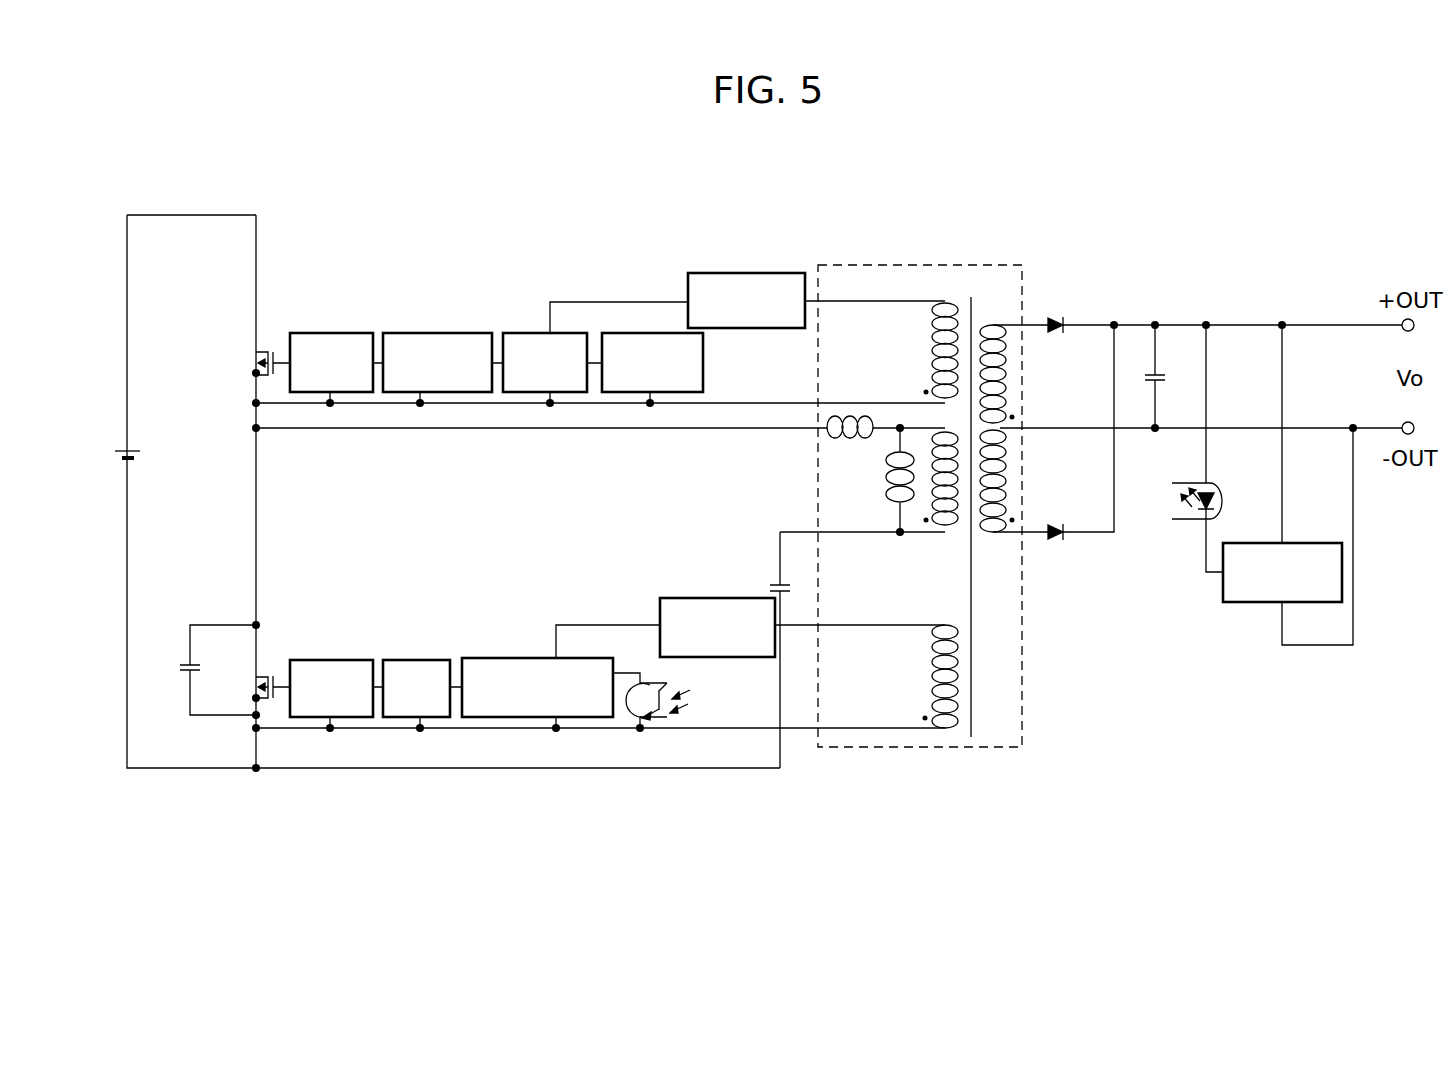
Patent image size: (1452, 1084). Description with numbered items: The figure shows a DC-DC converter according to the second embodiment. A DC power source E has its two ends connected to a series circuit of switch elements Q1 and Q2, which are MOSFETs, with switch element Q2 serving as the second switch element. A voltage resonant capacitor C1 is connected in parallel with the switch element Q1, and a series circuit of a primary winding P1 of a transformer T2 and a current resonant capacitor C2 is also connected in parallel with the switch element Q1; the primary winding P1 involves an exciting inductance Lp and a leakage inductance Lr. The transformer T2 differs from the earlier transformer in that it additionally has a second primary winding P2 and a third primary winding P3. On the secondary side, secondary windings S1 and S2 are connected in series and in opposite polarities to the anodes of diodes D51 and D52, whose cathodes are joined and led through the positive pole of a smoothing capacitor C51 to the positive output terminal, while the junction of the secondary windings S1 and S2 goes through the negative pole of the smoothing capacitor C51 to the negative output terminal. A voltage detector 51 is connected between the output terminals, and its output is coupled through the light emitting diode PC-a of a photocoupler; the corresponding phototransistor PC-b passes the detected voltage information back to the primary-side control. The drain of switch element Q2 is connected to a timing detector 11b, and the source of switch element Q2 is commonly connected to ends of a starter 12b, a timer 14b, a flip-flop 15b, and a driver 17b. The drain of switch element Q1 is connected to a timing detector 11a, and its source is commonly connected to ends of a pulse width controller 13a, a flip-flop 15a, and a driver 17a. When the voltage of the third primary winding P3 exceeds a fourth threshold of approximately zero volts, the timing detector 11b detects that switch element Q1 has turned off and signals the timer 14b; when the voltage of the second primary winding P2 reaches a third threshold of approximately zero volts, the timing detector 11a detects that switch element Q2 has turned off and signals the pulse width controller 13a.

The timing detector 11a is at (718, 598).
The timing detector 11b is at (745, 273).
The starter 12b is at (703, 363).
The pulse width controller 13a is at (530, 658).
The timer 14b is at (530, 333).
The flip-flop 15a is at (413, 660).
The flip-flop 15b is at (435, 333).
The driver 17a is at (332, 660).
The driver 17b is at (332, 333).
The voltage detector 51 is at (1312, 543).
The DC power source E is at (135, 456).
The voltage resonant capacitor C1 is at (220, 670).
The current resonant capacitor C2 is at (791, 601).
The smoothing capacitor C51 is at (1177, 376).
The switch element Q1 is at (272, 670).
The switch element Q2 is at (255, 364).
The transformer T2 is at (925, 504).
The primary winding P1 is at (873, 478).
The second primary winding P2 is at (873, 676).
The third primary winding P3 is at (873, 350).
The secondary winding S1 is at (1020, 374).
The secondary winding S2 is at (1020, 481).
The diode D51 is at (1058, 313).
The diode D52 is at (1058, 519).
The leakage inductance Lr is at (850, 442).
The exciting inductance Lp is at (885, 480).
The light emitting diode of photocoupler PC-a is at (1180, 525).
The phototransistor of photocoupler PC-b is at (666, 683).